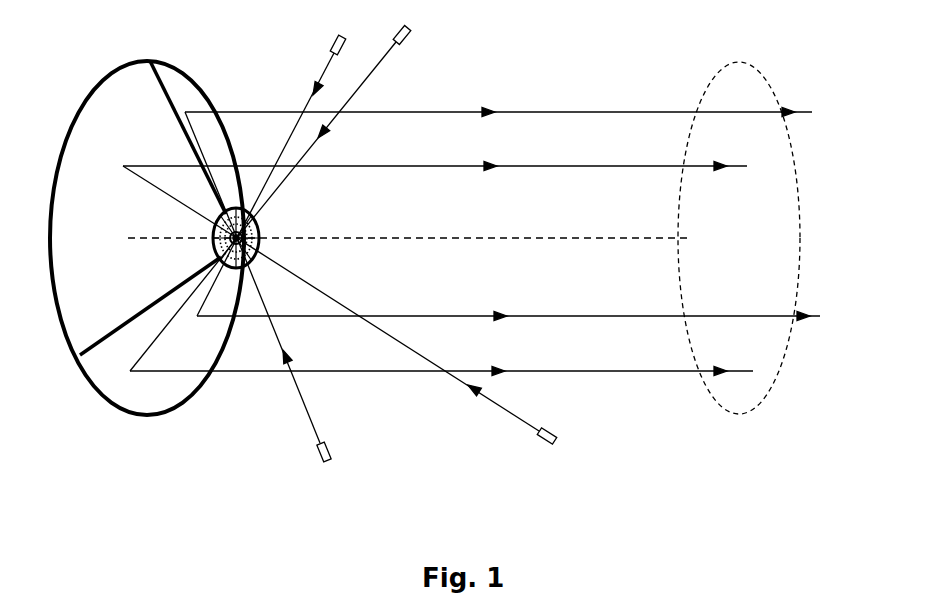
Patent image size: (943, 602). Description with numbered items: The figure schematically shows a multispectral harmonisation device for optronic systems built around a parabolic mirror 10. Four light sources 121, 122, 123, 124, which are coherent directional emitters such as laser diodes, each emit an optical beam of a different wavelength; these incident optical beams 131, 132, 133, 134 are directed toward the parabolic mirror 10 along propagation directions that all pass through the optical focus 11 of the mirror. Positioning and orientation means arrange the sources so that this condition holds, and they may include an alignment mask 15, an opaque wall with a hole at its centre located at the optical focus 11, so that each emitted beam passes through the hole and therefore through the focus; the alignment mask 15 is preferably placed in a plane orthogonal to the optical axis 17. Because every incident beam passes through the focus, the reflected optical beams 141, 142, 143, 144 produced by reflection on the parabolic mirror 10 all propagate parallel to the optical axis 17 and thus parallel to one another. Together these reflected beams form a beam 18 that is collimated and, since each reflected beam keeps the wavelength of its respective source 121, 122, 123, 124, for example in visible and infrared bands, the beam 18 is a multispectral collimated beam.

The parabolic mirror 10 is at (185, 69).
The optical focus 11 is at (257, 231).
The alignment mask 15 is at (213, 243).
The optical axis 17 is at (410, 233).
The beam 18 is at (724, 66).
The source 121 is at (330, 34).
The source 122 is at (412, 38).
The source 123 is at (556, 436).
The source 124 is at (332, 452).
The incident optical beam 131 is at (320, 72).
The incident optical beam 132 is at (364, 90).
The incident optical beam 133 is at (520, 420).
The incident optical beam 134 is at (308, 418).
The reflected optical beam 141 is at (590, 314).
The reflected optical beam 142 is at (558, 369).
The reflected optical beam 143 is at (555, 162).
The reflected optical beam 144 is at (560, 100).